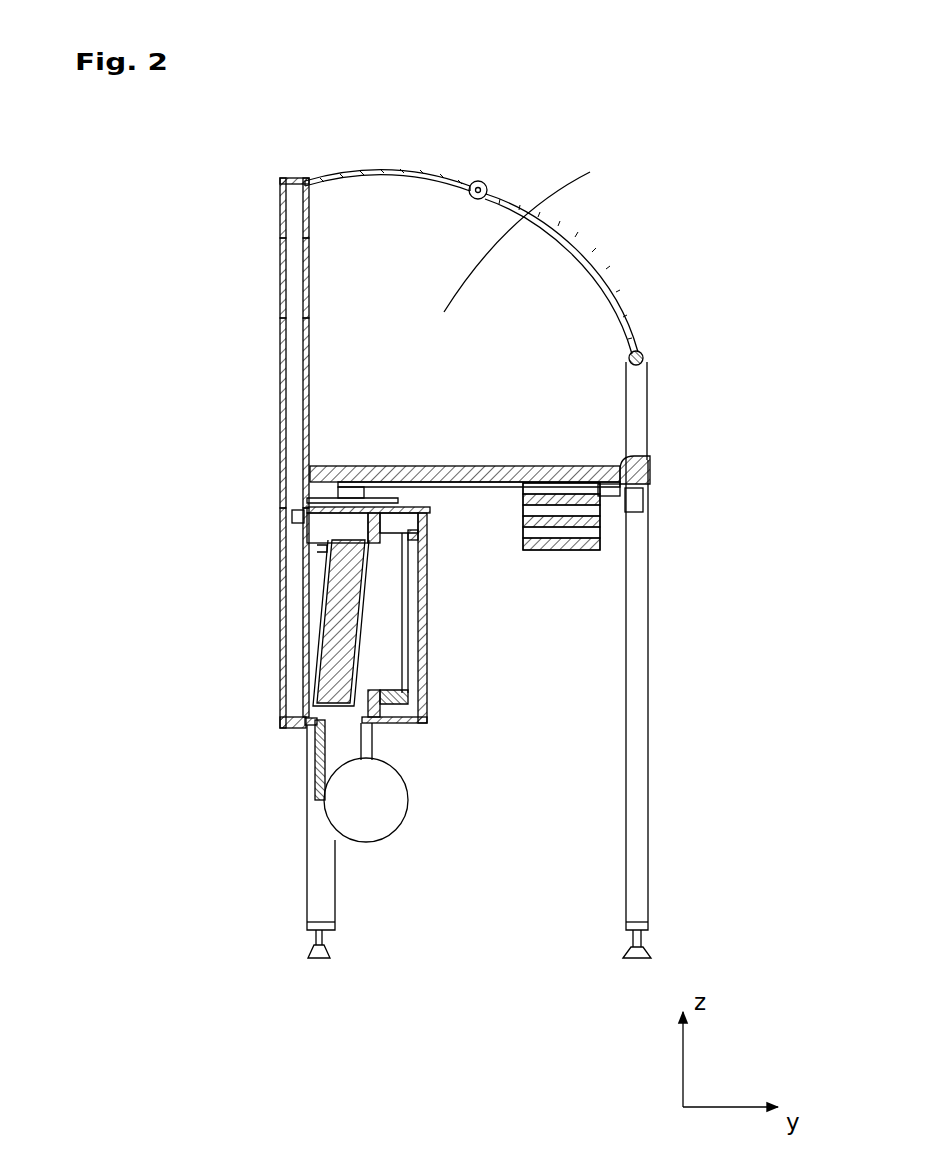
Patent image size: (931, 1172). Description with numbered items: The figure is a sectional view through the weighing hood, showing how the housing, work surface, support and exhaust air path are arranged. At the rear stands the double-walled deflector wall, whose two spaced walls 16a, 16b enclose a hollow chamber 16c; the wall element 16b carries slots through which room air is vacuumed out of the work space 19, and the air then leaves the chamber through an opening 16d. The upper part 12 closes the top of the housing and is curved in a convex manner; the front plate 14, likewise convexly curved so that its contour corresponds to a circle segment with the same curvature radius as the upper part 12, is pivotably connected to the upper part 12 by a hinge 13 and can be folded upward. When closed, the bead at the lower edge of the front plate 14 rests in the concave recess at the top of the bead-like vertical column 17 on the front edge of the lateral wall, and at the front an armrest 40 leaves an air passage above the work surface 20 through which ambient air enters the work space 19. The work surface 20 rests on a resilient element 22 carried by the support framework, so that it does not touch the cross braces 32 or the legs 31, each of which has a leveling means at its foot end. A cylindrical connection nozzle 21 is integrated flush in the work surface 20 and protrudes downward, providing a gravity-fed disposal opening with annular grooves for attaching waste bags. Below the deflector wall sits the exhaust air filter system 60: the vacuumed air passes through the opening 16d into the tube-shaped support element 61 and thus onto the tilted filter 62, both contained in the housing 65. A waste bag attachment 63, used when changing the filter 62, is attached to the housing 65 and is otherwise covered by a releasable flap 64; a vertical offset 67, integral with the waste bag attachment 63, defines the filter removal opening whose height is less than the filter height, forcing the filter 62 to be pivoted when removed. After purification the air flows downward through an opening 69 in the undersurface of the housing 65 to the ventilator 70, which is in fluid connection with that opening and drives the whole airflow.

The upper part 12 is at (430, 172).
The hinge 13 is at (487, 186).
The front plate 14 is at (600, 272).
The wall of the deflector wall 16a is at (283, 213).
The wall element of the deflector wall 16b is at (306, 292).
The hollow chamber 16c is at (284, 362).
The opening 16d is at (297, 645).
The vertical column 17 is at (640, 396).
The work space 19 is at (538, 234).
The work surface 20 is at (490, 464).
The connection nozzle 21 is at (560, 525).
The resilient element 22 is at (336, 488).
The leg 31 is at (320, 890).
The cross brace 32 is at (299, 510).
The armrest 40 is at (647, 464).
The exhaust air filter system 60 is at (363, 690).
The tube-shaped support element 61 is at (318, 562).
The filter 62 is at (332, 660).
The waste bag attachment 63 is at (392, 696).
The releasable flap 64 is at (428, 730).
The housing 65 is at (312, 733).
The vertical offset 67 is at (382, 735).
The opening 69 is at (342, 724).
The ventilator 70 is at (370, 812).